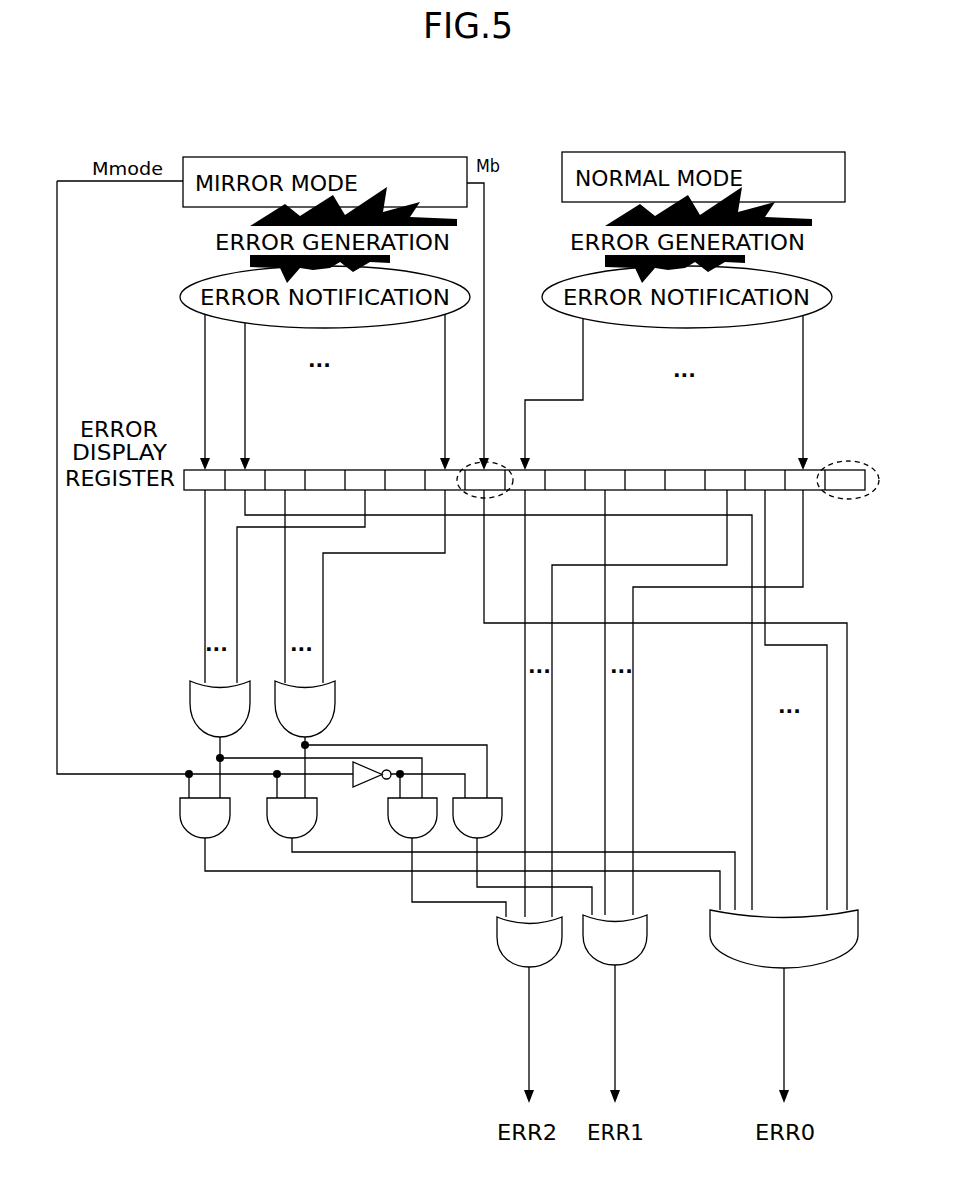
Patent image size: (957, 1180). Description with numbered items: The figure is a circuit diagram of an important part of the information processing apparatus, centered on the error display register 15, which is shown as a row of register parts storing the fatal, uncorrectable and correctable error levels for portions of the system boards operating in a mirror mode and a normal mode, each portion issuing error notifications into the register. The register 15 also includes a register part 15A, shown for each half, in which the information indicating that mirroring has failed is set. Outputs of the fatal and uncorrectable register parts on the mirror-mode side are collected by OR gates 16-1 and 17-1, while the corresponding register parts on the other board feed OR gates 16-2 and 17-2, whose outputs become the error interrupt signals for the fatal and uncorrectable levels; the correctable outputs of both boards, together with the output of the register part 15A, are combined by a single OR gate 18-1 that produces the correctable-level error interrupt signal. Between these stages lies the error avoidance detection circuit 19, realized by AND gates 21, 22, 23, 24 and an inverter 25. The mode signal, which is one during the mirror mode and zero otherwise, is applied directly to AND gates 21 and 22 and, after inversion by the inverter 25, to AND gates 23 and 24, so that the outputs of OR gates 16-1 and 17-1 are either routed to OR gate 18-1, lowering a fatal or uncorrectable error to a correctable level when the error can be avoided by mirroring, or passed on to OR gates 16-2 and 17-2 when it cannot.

The error display register 15 is at (505, 462).
The register part 15A is at (493, 497).
The OR gate 16-1 is at (190, 706).
The OR gate 17-1 is at (337, 697).
The OR gate 16-2 is at (497, 935).
The OR gate 17-2 is at (632, 962).
The OR gate 18-1 is at (828, 966).
The error avoidance detection circuit 19 is at (434, 841).
The AND gate 21 is at (178, 822).
The AND gate 22 is at (268, 822).
The AND gate 23 is at (388, 812).
The AND gate 24 is at (495, 797).
The inverter 25 is at (370, 762).